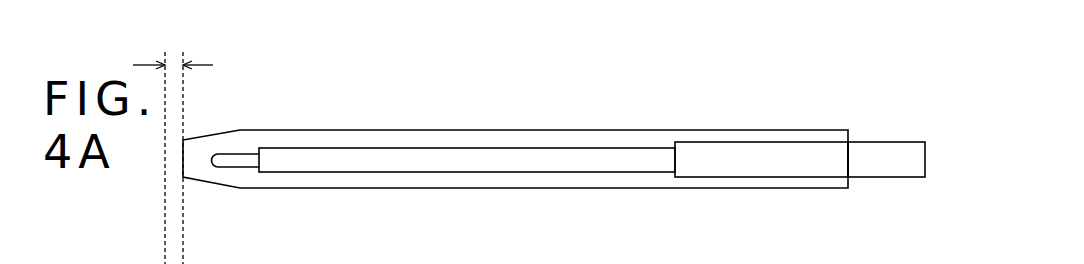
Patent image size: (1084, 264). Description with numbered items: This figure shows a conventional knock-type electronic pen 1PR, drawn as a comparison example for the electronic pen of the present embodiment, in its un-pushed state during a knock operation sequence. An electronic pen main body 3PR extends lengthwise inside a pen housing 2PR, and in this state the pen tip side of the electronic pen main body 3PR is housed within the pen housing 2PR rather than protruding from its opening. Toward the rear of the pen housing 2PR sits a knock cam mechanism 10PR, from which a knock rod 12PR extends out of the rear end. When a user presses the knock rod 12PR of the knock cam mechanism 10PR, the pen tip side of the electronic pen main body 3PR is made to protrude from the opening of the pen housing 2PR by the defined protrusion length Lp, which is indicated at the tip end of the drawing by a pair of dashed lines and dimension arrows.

The conventional knock-type electronic pen 1PR is at (566, 153).
The pen housing 2PR is at (390, 128).
The electronic pen main body 3PR is at (445, 160).
The knock cam mechanism 10PR is at (723, 167).
The knock rod 12PR is at (875, 148).
The defined protrusion length Lp is at (170, 67).